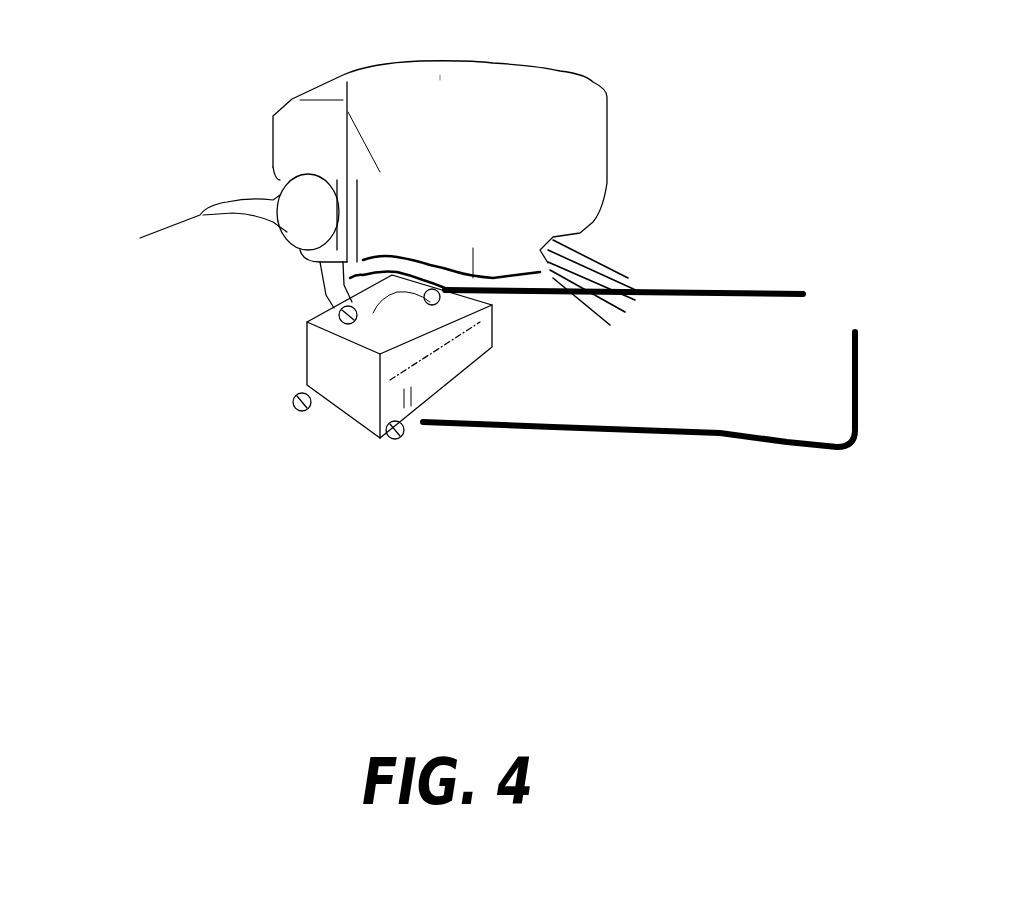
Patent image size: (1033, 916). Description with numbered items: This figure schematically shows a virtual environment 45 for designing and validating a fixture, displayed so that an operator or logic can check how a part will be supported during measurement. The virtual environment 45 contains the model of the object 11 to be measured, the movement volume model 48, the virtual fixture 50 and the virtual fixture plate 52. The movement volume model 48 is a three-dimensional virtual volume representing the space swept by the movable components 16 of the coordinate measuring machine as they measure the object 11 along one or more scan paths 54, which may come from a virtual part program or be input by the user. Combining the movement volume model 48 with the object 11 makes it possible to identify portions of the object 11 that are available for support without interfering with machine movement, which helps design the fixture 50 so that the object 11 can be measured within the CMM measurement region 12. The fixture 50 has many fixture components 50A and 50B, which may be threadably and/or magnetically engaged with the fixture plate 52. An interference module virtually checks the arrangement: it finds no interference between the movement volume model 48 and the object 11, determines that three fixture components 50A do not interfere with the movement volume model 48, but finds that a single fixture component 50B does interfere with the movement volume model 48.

The virtual environment 45 is at (92, 172).
The CMM measurement region 12 is at (214, 314).
The movable components 16 is at (585, 178).
The movement volume model 48 is at (603, 122).
The virtual fixture 50 is at (639, 368).
The fixture components 50A is at (333, 316).
The fixture component 50B is at (436, 310).
The virtual fixture plate 52 is at (359, 492).
The scan paths 54 is at (324, 356).
The object 11 is at (362, 393).